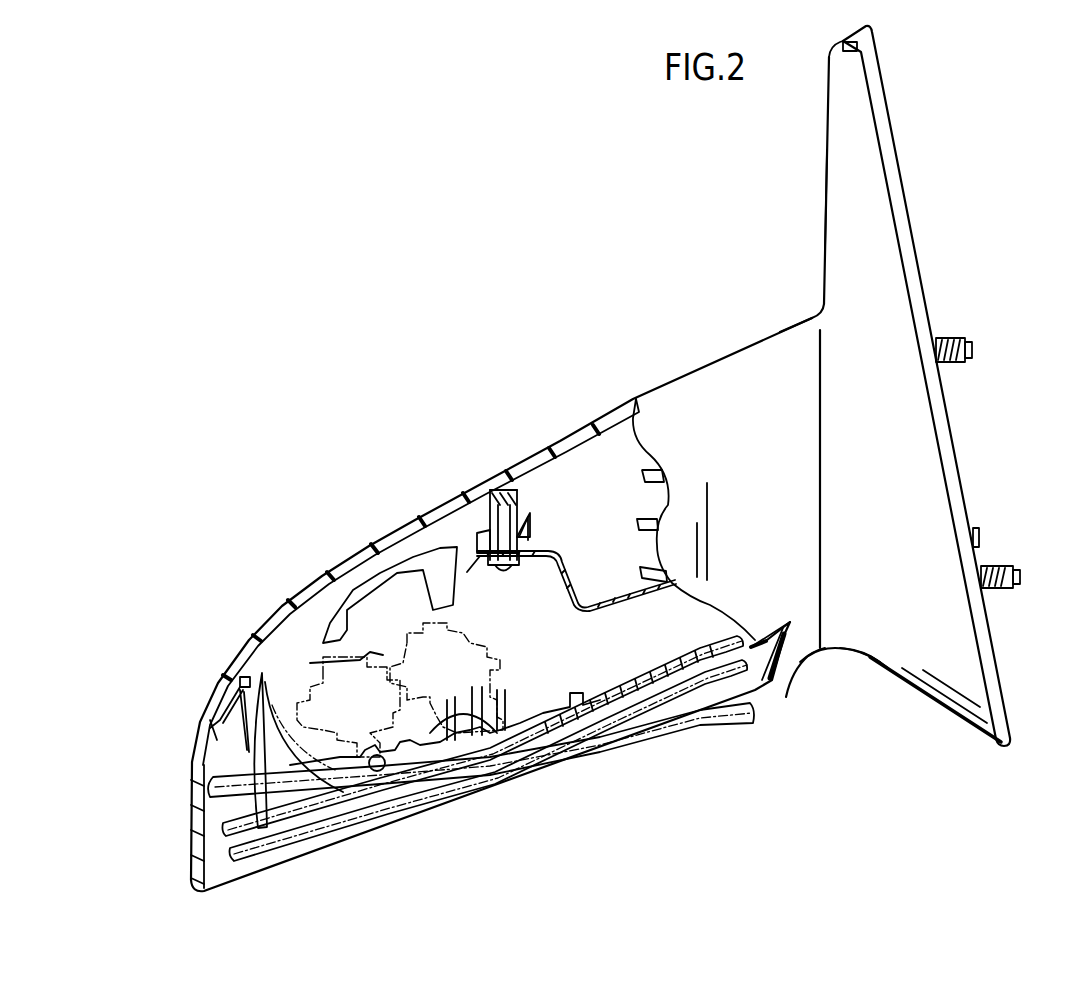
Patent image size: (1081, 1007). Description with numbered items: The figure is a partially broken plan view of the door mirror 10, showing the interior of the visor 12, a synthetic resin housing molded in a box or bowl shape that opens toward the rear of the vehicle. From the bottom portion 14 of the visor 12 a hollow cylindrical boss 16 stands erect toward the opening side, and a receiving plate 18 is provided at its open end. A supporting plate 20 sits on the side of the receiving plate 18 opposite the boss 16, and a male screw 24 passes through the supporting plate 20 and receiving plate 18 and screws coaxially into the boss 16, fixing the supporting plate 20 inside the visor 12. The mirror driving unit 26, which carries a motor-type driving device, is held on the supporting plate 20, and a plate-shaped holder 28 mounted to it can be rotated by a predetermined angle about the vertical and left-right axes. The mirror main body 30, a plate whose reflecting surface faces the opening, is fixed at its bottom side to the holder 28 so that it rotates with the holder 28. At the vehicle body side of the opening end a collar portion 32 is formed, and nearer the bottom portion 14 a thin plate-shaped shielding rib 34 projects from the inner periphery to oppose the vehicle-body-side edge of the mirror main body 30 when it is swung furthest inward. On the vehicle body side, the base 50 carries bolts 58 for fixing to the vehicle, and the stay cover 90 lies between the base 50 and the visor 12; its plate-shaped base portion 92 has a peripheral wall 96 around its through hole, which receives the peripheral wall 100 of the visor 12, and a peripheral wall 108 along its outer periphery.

The door mirror 10 is at (961, 116).
The visor 12 is at (436, 506).
The bottom portion 14 is at (360, 560).
The boss 16 is at (517, 488).
The receiving plate 18 is at (530, 537).
The supporting plate 20 is at (588, 608).
The male screw 24 is at (513, 567).
The mirror driving unit 26 is at (516, 656).
The holder 28 is at (515, 700).
The mirror main body 30 is at (707, 690).
The collar portion 32 is at (757, 699).
The shielding rib 34 is at (752, 640).
The base 50 is at (609, 460).
The bolts 58 is at (955, 343).
The stay cover 90 is at (921, 483).
The base portion 92 is at (825, 178).
The peripheral wall 96 is at (848, 655).
The peripheral wall 100 is at (813, 653).
The peripheral wall 108 is at (876, 212).